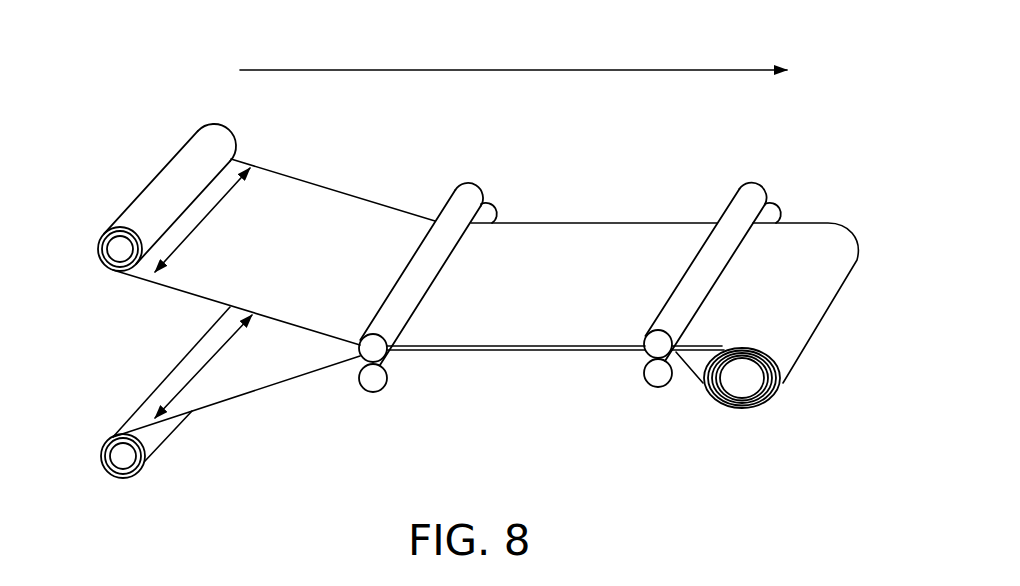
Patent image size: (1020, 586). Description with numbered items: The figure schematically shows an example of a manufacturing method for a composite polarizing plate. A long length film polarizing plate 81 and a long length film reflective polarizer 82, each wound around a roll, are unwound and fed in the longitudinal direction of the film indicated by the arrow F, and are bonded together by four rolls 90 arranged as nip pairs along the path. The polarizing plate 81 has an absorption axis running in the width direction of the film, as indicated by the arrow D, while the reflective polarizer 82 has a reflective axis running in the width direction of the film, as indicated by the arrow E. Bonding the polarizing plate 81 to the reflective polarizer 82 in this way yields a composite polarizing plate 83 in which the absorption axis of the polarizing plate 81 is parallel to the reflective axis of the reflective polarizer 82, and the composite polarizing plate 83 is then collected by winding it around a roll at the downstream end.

The long length film polarizing plate 81 is at (218, 143).
The long length film reflective polarizer 82 is at (128, 462).
The composite polarizing plate 83 is at (787, 355).
The rolls 90 is at (383, 345).
The arrow indicating absorption axis direction D is at (205, 213).
The arrow indicating reflective axis direction E is at (213, 358).
The arrow indicating longitudinal feeding direction F is at (510, 70).